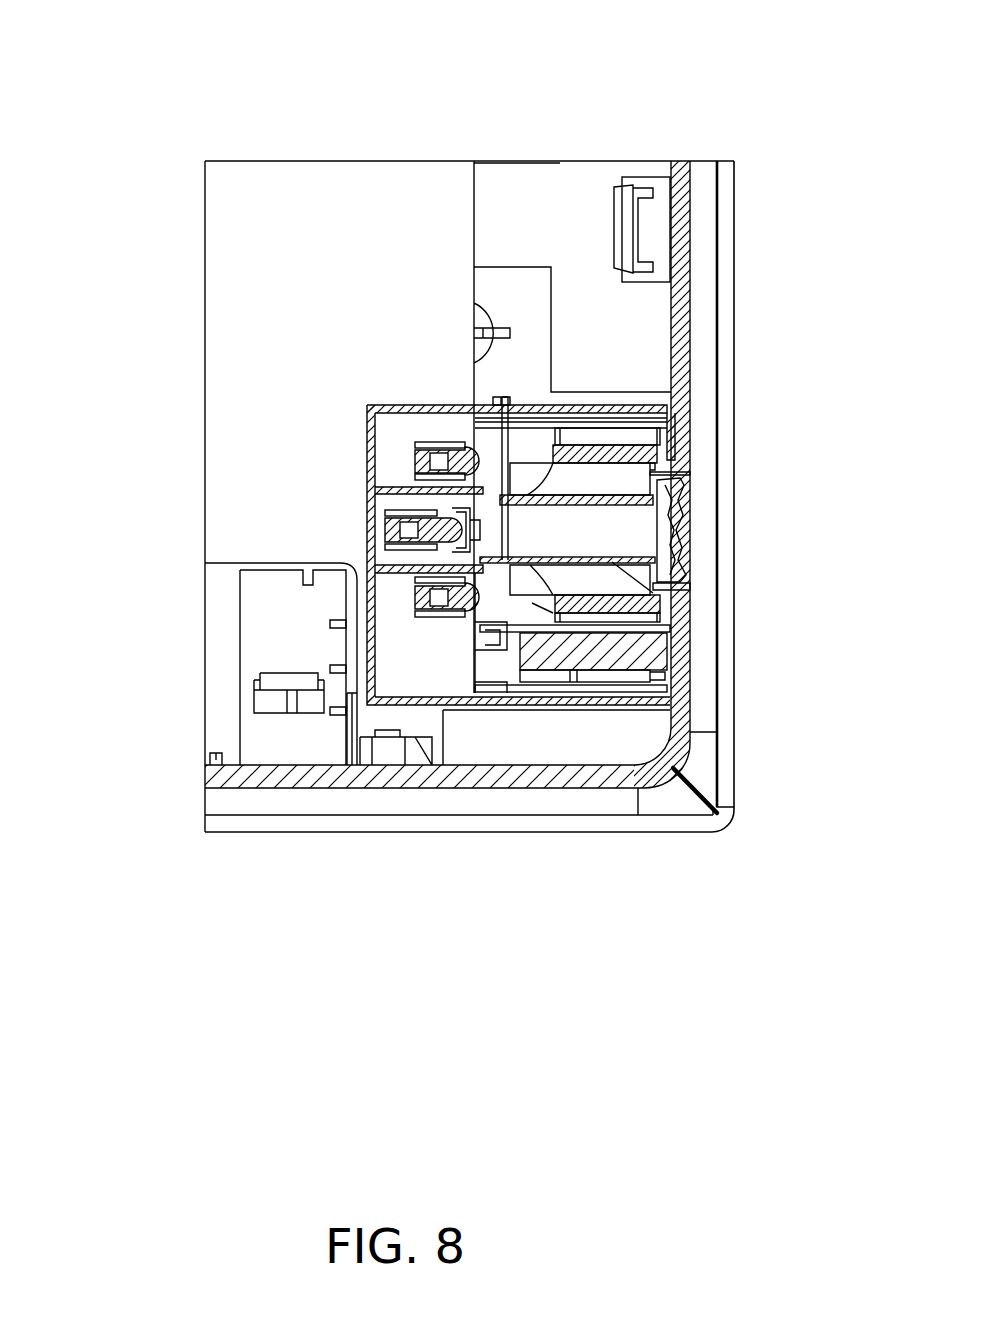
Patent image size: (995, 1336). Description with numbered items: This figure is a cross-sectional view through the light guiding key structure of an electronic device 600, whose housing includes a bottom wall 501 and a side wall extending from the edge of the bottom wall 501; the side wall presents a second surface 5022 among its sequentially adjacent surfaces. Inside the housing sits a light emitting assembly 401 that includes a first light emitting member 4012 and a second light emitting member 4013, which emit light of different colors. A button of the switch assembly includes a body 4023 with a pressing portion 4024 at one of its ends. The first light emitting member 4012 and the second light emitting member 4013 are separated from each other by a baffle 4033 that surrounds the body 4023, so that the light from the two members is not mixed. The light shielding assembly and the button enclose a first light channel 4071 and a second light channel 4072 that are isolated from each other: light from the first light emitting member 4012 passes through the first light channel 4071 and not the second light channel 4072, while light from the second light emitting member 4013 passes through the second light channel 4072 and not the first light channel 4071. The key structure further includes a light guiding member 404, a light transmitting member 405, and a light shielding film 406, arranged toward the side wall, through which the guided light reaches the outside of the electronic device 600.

The electronic device 600 is at (343, 62).
The second surface 5022 is at (727, 250).
The bottom wall 501 is at (525, 823).
The light emitting assembly 401 is at (95, 403).
The second light emitting member 4013 is at (415, 442).
The first light emitting member 4012 is at (407, 513).
The baffle 4033 is at (403, 572).
The light shielding film 406 is at (668, 412).
The light transmitting member 405 is at (672, 443).
The light guiding member 404 is at (690, 497).
The first light channel 4071 is at (625, 528).
The pressing portion 4024 is at (683, 585).
The body 4023 is at (553, 613).
The second light channel 4072 is at (662, 658).